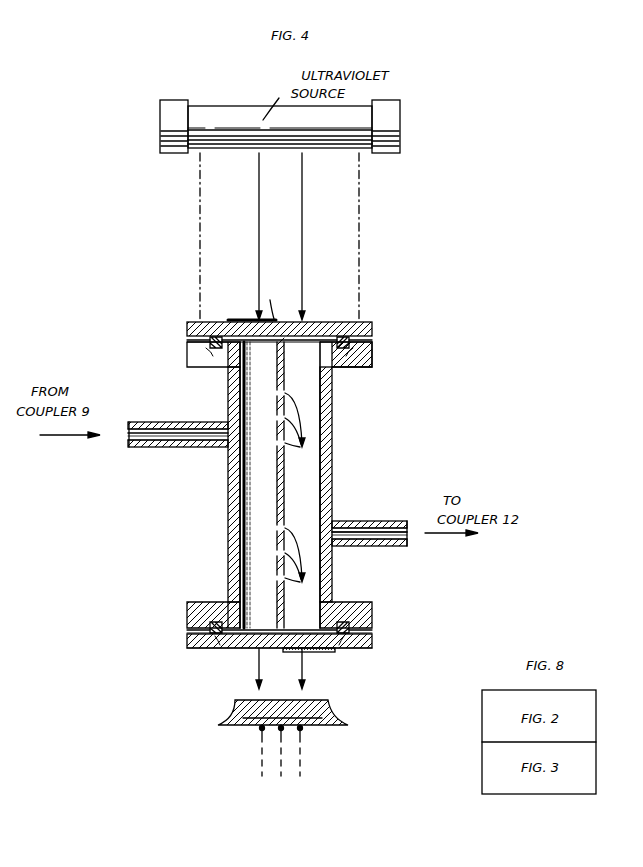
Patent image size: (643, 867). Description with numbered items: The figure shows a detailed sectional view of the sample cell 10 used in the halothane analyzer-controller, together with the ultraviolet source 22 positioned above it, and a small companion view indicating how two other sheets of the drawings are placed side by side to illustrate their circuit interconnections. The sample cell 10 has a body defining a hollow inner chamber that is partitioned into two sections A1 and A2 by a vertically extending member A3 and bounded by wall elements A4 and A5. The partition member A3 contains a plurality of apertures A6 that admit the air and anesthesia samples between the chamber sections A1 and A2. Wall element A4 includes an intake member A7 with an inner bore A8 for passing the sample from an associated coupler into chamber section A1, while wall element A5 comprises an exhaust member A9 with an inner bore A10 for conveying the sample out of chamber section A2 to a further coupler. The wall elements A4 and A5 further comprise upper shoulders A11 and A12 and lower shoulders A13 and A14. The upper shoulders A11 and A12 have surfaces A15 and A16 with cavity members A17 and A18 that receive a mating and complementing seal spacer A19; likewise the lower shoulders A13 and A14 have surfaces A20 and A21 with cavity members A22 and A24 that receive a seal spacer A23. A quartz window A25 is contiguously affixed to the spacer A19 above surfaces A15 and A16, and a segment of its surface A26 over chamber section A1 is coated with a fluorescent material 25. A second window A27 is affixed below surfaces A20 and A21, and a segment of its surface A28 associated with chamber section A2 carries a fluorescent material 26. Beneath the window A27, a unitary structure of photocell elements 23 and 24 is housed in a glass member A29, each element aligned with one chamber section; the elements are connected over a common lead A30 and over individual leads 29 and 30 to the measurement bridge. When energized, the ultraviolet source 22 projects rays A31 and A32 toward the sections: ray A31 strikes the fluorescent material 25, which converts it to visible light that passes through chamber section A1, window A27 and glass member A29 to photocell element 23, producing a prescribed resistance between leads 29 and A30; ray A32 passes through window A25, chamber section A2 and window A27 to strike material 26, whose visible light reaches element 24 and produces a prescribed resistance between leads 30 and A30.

The ultraviolet source 22 is at (208, 106).
The ultraviolet ray A31 is at (258, 224).
The ultraviolet ray A32 is at (303, 224).
The fluorescent material 25 is at (240, 319).
The window A25 is at (283, 301).
The surface A26 is at (362, 326).
The seal spacer A19 is at (212, 340).
The surface A15 is at (205, 338).
The surface A16 is at (355, 339).
The upper shoulder A11 is at (186, 358).
The upper shoulder A12 is at (373, 357).
The cavity member A17 is at (210, 350).
The cavity member A18 is at (345, 350).
The sample cell 10 is at (360, 426).
The wall element A4 is at (227, 499).
The wall element A5 is at (333, 457).
The chamber section A1 is at (257, 485).
The chamber section A2 is at (303, 488).
The vertically extending member A3 is at (285, 353).
The apertures A6 is at (299, 496).
The inner bore A8 is at (182, 428).
The intake member A7 is at (151, 448).
The exhaust member A9 is at (361, 527).
The inner bore A10 is at (357, 541).
The lower shoulder A13 is at (186, 603).
The lower shoulder A14 is at (373, 600).
The cavity member A22 is at (210, 620).
The cavity member A24 is at (350, 616).
The surface A20 is at (208, 630).
The surface A21 is at (352, 631).
The surface A28 is at (192, 648).
The window A27 is at (345, 650).
The seal spacer A23 is at (218, 634).
The fluorescent material 26 is at (322, 653).
The glass member A29 is at (233, 713).
The photocell element 23 is at (246, 728).
The photocell element 24 is at (316, 728).
The lead 29 is at (260, 748).
The lead 30 is at (303, 748).
The common lead A30 is at (284, 752).